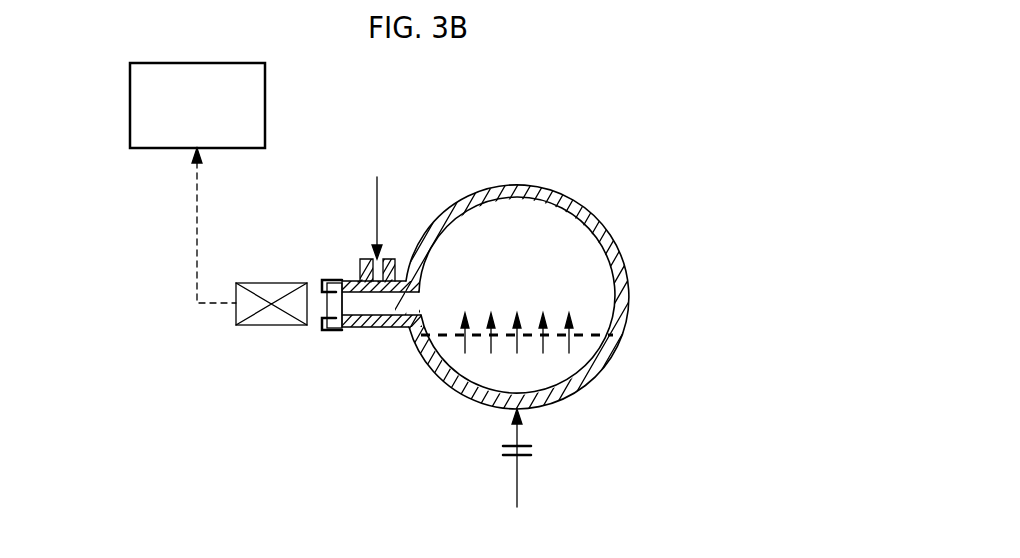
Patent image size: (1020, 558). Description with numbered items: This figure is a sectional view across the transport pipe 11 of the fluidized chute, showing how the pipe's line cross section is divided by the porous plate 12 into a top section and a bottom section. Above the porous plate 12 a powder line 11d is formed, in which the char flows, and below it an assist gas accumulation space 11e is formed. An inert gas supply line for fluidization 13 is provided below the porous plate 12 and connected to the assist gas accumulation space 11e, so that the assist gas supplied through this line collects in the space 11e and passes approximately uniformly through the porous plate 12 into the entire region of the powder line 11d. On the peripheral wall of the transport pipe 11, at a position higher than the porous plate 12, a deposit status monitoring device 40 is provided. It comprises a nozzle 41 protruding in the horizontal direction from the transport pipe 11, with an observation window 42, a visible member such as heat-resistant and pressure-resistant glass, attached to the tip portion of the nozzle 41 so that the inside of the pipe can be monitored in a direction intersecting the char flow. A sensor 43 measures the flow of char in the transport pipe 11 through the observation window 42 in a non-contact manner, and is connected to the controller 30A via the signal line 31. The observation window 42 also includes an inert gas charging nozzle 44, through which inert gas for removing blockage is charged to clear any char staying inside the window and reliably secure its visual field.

The controller 30A is at (130, 101).
The signal line 31 is at (195, 226).
The sensor 43 is at (271, 283).
The deposit status monitoring device 40 is at (270, 352).
The observation window 42 is at (334, 330).
The nozzle 41 is at (381, 328).
The inert gas charging nozzle 44 is at (396, 258).
The transport pipe 11 is at (582, 205).
The powder line 11d is at (517, 225).
The porous plate 12 is at (584, 332).
The assist gas accumulation space 11e is at (570, 368).
The inert gas supply line for fluidization 13 is at (518, 478).